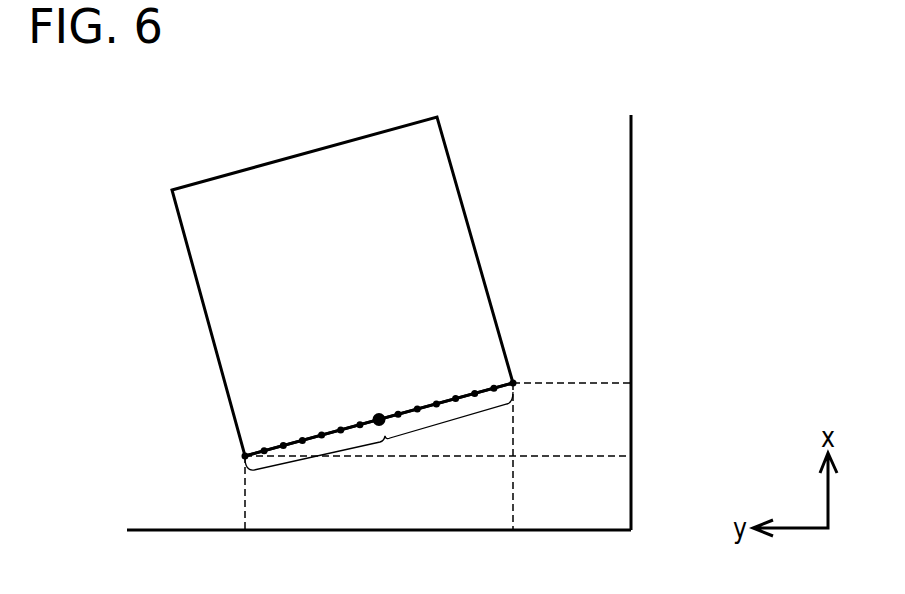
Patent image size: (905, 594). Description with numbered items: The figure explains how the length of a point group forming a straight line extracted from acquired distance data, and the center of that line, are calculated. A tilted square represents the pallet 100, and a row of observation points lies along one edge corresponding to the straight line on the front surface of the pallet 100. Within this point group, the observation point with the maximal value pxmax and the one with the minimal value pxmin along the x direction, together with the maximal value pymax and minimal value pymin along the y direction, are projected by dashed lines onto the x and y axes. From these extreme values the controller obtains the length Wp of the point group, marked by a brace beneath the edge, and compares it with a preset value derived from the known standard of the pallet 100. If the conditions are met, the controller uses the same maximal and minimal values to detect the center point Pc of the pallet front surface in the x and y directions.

The pallet 100 is at (440, 170).
The length of the point group Wp is at (385, 438).
The center point Pc is at (417, 380).
The maximal value along the x direction pxmax is at (602, 386).
The minimal value along the x direction pxmin is at (466, 459).
The maximal value along the y direction pymax is at (260, 512).
The minimal value along the y direction pymin is at (524, 476).